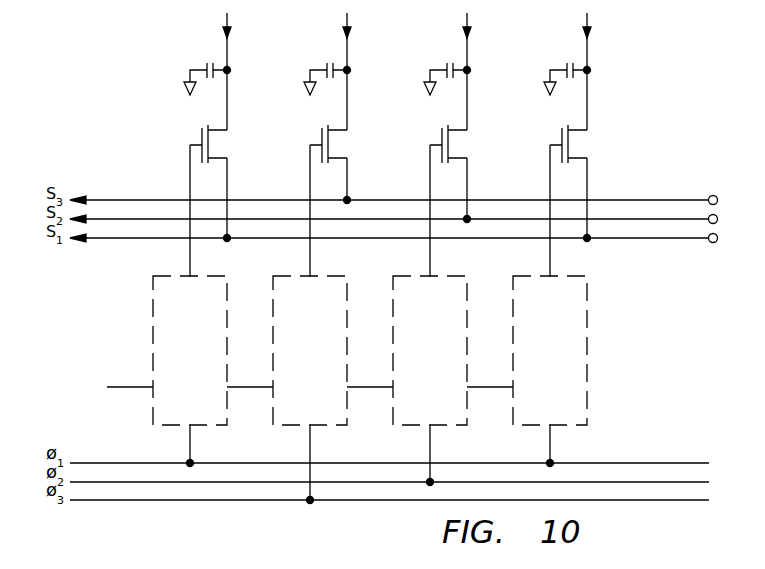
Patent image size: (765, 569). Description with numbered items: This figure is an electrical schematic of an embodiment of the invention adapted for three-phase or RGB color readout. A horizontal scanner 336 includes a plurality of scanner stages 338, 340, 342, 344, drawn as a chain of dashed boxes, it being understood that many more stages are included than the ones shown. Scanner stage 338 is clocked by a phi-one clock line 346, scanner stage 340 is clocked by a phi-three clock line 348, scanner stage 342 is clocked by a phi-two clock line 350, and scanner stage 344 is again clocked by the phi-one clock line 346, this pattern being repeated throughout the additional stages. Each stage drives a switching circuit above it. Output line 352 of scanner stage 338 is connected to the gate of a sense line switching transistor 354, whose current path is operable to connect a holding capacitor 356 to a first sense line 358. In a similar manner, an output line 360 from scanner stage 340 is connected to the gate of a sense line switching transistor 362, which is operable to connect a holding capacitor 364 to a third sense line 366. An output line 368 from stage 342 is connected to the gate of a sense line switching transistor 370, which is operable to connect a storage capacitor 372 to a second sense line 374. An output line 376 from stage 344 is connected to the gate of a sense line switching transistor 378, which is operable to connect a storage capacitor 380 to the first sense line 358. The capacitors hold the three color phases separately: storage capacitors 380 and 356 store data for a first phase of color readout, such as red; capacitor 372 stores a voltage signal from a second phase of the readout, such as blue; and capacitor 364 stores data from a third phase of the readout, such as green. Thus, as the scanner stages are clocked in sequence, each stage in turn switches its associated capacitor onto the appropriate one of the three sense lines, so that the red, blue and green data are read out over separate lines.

The horizontal scanner 336 is at (133, 322).
The scanner stage 338 is at (178, 355).
The scanner stage 340 is at (298, 355).
The scanner stage 342 is at (418, 355).
The scanner stage 344 is at (538, 355).
The phi-one clock line 346 is at (137, 463).
The phi-three clock line 348 is at (396, 502).
The phi-two clock line 350 is at (249, 483).
The output line 352 is at (190, 263).
The sense line switching transistor 354 is at (201, 132).
The holding capacitor 356 is at (207, 63).
The first sense line 358 is at (472, 239).
The output line 360 is at (310, 263).
The sense line switching transistor 362 is at (321, 132).
The holding capacitor 364 is at (327, 63).
The third sense line 366 is at (372, 200).
The output line 368 is at (430, 263).
The sense line switching transistor 370 is at (441, 132).
The storage capacitor 372 is at (447, 63).
The second sense line 374 is at (492, 219).
The output line 376 is at (552, 258).
The sense line switching transistor 378 is at (561, 132).
The storage capacitor 380 is at (567, 63).